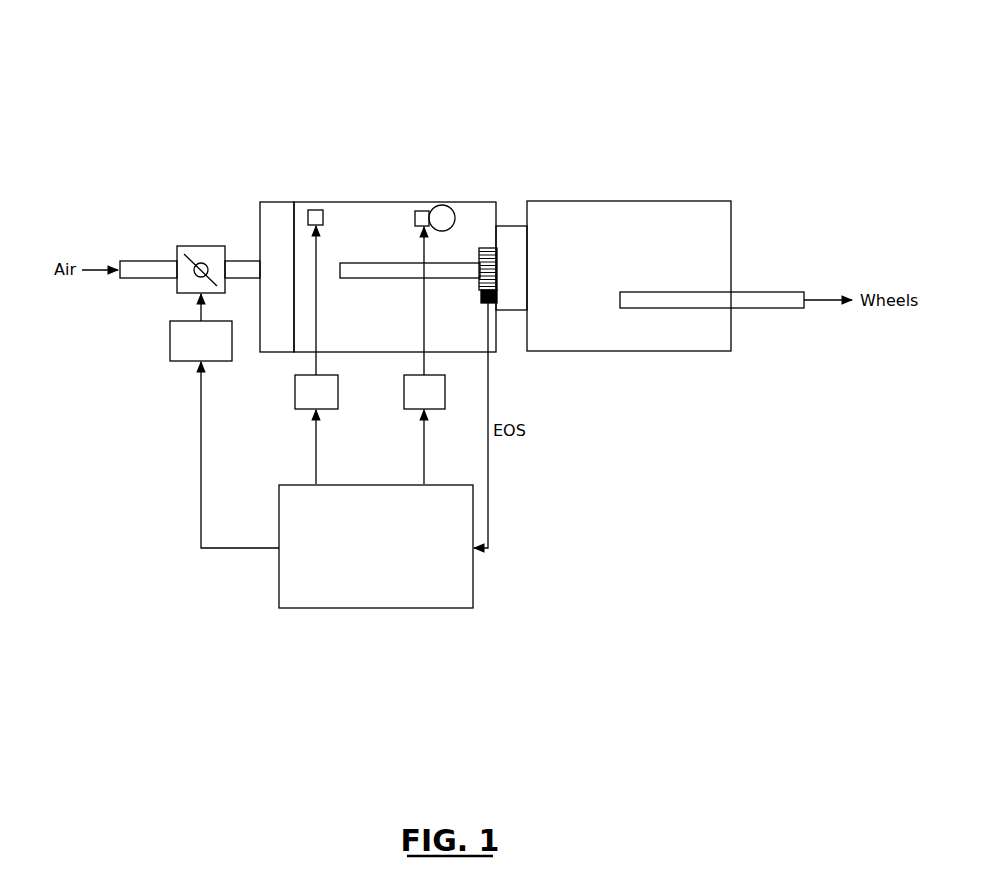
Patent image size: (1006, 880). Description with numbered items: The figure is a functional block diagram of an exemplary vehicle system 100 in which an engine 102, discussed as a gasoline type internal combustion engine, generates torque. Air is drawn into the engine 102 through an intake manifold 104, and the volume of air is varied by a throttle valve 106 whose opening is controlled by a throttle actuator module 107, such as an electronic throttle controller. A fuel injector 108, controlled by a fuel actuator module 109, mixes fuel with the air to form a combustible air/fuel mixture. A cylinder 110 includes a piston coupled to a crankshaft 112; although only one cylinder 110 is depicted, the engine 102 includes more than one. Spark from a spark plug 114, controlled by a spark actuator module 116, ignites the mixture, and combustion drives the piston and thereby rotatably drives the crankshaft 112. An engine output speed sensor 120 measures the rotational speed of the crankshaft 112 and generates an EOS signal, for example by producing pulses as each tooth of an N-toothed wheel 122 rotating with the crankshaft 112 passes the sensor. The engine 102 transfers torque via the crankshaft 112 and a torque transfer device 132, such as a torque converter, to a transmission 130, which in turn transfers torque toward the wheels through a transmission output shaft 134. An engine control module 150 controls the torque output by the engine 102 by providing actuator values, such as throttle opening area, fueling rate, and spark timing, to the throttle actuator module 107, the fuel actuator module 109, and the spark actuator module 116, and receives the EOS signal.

The vehicle system 100 is at (881, 48).
The engine 102 is at (382, 202).
The intake manifold 104 is at (280, 202).
The throttle valve 106 is at (203, 246).
The throttle actuator module 107 is at (185, 361).
The fuel injector 108 is at (322, 210).
The fuel actuator module 109 is at (302, 409).
The cylinder 110 is at (443, 205).
The crankshaft 112 is at (365, 263).
The spark plug 114 is at (423, 211).
The spark actuator module 116 is at (412, 409).
The engine output speed sensor 120 is at (481, 307).
The N-toothed wheel 122 is at (480, 282).
The transmission 130 is at (625, 201).
The torque transfer device 132 is at (510, 226).
The transmission output shaft 134 is at (677, 292).
The engine control module 150 is at (382, 608).